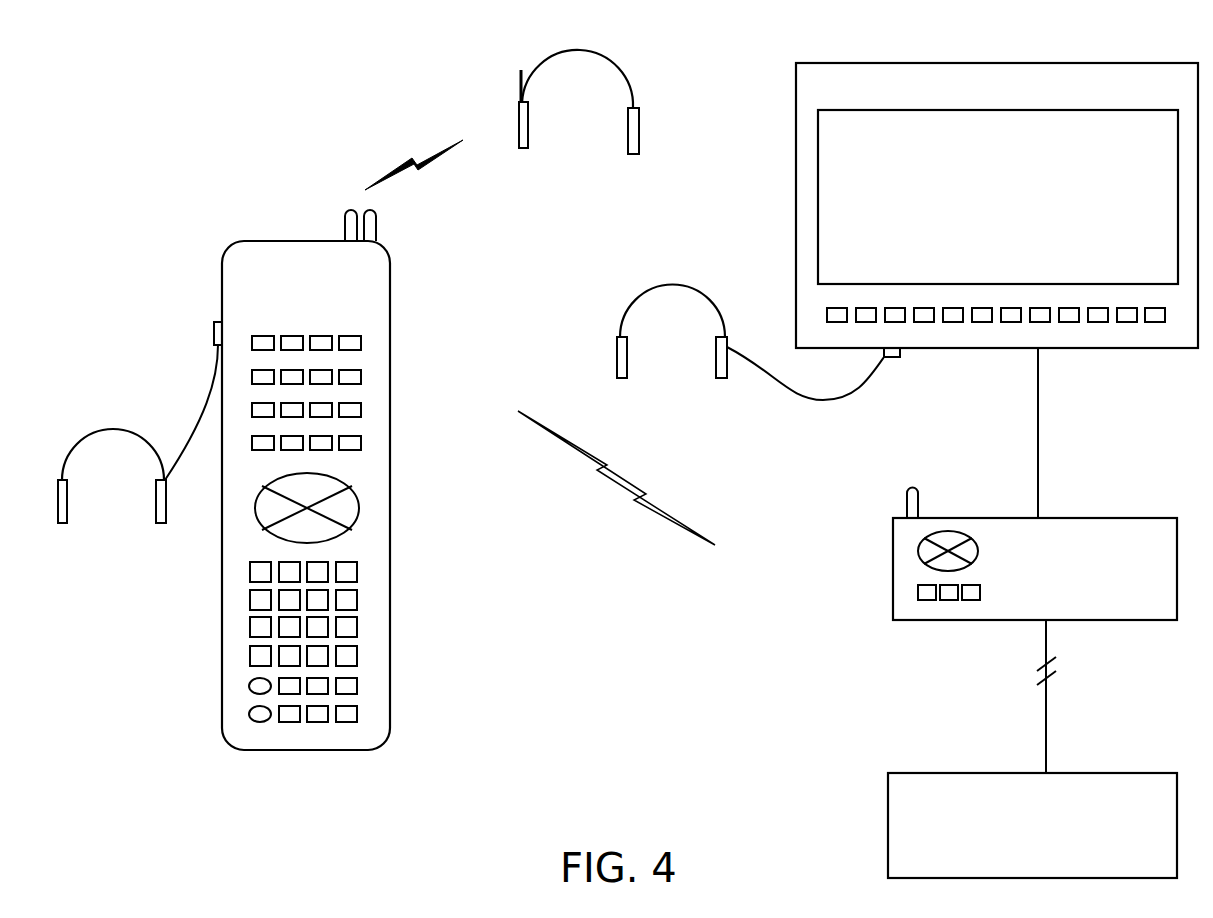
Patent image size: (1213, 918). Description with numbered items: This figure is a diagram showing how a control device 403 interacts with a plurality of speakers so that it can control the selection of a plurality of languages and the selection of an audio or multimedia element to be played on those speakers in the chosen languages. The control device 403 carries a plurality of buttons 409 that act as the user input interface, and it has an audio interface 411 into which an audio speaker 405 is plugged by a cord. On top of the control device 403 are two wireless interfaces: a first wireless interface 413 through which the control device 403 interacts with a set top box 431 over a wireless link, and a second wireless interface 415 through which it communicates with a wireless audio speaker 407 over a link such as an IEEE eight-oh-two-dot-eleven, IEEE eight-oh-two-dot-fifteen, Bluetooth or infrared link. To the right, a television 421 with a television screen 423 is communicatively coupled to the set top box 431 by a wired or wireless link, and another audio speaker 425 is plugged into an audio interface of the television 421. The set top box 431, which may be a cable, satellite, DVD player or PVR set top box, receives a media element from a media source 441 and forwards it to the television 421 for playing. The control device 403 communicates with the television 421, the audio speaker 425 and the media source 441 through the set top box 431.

The control device 403 is at (306, 495).
The audio speaker 405 is at (124, 436).
The wireless audio speaker 407 is at (600, 52).
The plurality of buttons 409 is at (378, 621).
The audio interface 411 is at (214, 318).
The first wireless interface 413 is at (388, 217).
The second wireless interface 415 is at (340, 203).
The television 421 is at (997, 210).
The television screen 423 is at (998, 197).
The audio speaker 425 is at (627, 295).
The set top box 431 is at (1035, 554).
The media source 441 is at (1032, 825).